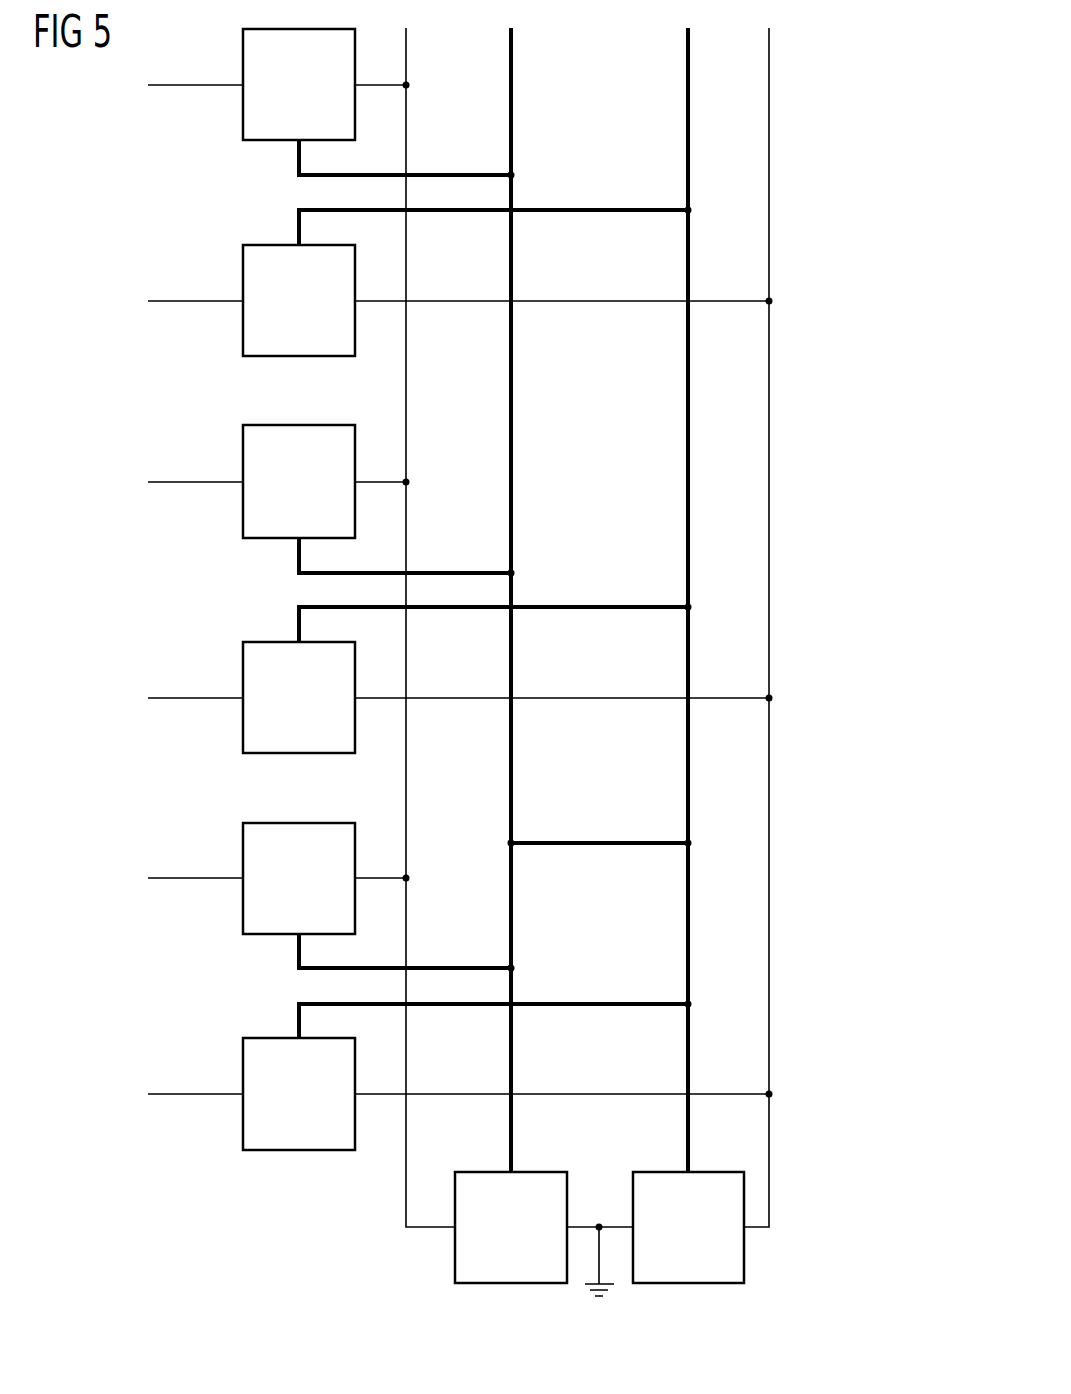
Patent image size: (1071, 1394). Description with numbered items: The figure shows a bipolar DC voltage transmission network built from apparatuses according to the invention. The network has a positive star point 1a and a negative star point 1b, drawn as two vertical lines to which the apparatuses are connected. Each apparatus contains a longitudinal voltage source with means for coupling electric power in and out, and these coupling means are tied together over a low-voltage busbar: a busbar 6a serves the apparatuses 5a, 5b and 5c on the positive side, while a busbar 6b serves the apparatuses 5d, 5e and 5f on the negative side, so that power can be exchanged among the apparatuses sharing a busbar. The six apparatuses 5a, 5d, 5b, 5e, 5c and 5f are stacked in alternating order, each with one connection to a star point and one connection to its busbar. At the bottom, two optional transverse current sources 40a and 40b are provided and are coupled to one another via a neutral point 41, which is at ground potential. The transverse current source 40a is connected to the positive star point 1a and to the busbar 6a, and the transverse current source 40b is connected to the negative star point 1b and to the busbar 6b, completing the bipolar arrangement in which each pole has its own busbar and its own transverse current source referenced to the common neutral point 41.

The apparatus 5a is at (243, 58).
The apparatus 5b is at (243, 451).
The apparatus 5c is at (243, 851).
The apparatus 5d is at (243, 273).
The apparatus 5e is at (243, 666).
The apparatus 5f is at (243, 1065).
The busbar 6a is at (513, 100).
The busbar 6b is at (686, 480).
The positive star point 1a is at (408, 482).
The negative star point 1b is at (771, 301).
The transverse current source 40a is at (455, 1255).
The transverse current source 40b is at (744, 1255).
The neutral point 41 is at (599, 1224).